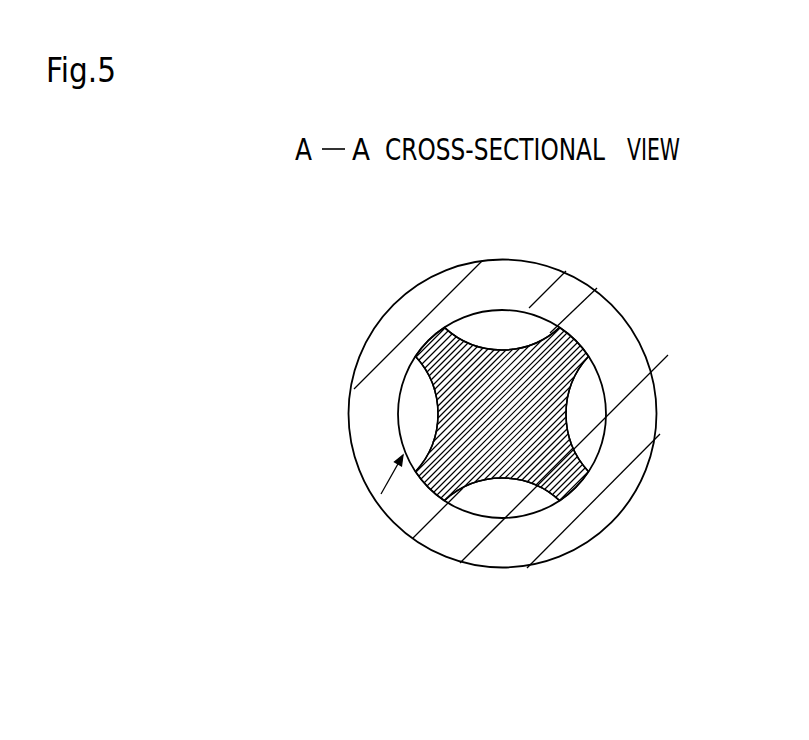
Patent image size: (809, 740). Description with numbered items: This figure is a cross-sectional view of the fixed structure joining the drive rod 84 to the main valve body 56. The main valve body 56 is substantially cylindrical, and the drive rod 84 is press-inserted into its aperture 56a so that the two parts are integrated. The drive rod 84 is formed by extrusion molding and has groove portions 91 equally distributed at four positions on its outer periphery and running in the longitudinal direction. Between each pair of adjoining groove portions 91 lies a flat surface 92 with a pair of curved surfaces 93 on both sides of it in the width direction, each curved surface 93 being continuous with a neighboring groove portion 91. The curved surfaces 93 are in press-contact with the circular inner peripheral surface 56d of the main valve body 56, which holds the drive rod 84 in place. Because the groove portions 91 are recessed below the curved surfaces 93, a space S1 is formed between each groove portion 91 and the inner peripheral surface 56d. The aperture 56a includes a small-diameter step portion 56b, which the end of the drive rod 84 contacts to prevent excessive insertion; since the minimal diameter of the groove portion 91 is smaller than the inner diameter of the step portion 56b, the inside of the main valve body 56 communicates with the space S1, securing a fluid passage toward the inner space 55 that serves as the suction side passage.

The inner space 55 is at (428, 415).
The main valve body 56 is at (380, 463).
The aperture 56a is at (381, 494).
The small-diameter step portion 56b is at (586, 452).
The inner peripheral surface 56d is at (457, 503).
The drive rod 84 is at (597, 305).
The groove portion 91 is at (522, 346).
The flat surface 92 is at (434, 322).
The curved surface 93 is at (449, 342).
The space S1 is at (504, 348).